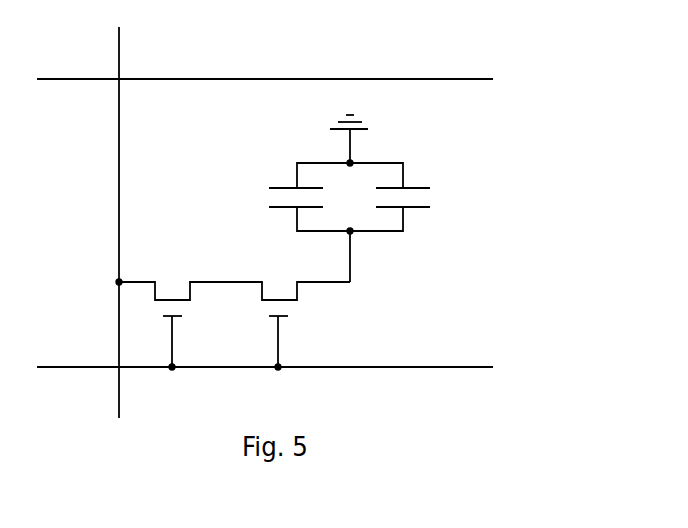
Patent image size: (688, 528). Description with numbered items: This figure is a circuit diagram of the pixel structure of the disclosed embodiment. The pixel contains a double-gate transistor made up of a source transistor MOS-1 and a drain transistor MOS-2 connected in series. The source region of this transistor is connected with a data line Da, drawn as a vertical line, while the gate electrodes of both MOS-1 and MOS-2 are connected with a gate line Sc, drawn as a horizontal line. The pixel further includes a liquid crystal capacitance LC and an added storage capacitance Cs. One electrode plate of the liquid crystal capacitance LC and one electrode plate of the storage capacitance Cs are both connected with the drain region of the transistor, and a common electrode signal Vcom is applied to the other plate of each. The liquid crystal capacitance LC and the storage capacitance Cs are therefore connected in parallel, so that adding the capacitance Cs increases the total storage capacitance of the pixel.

The gate line Sc is at (265, 209).
The data line Da is at (139, 222).
The common electrode signal Vcom is at (350, 130).
The liquid crystal capacitance LC is at (279, 198).
The storage capacitance Cs is at (421, 198).
The source transistor MOS-1 is at (171, 313).
The drain transistor MOS-2 is at (288, 313).